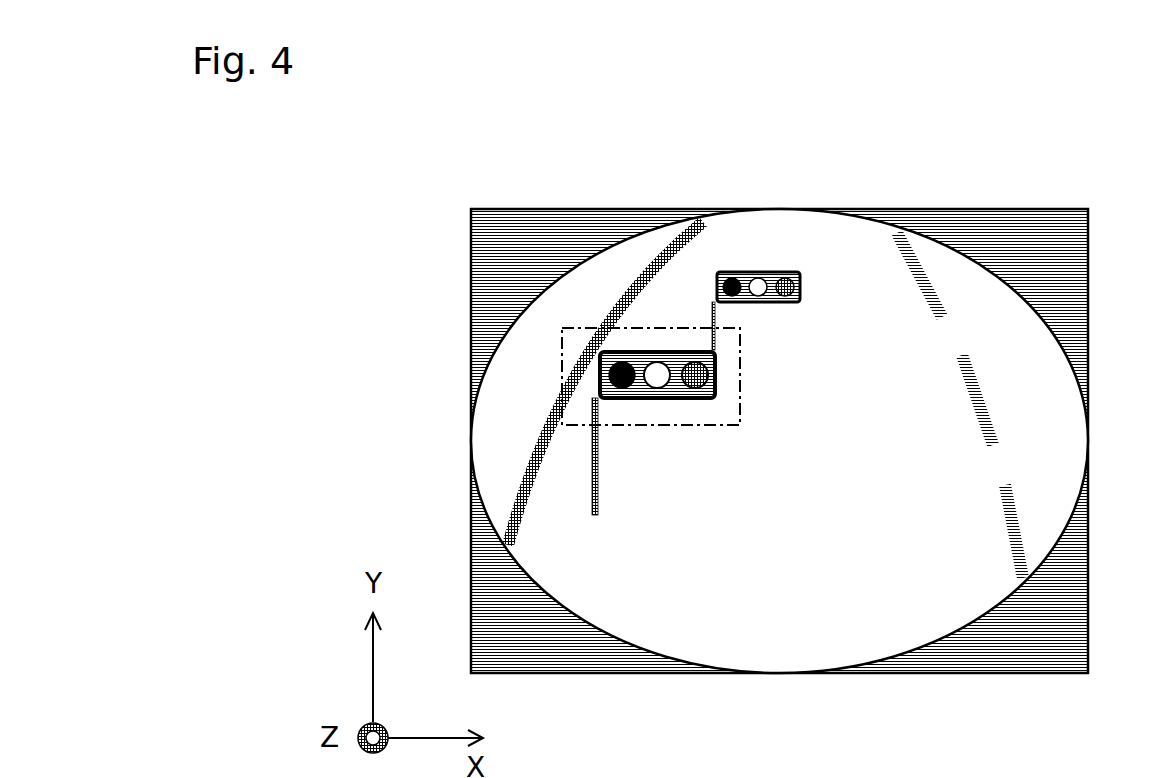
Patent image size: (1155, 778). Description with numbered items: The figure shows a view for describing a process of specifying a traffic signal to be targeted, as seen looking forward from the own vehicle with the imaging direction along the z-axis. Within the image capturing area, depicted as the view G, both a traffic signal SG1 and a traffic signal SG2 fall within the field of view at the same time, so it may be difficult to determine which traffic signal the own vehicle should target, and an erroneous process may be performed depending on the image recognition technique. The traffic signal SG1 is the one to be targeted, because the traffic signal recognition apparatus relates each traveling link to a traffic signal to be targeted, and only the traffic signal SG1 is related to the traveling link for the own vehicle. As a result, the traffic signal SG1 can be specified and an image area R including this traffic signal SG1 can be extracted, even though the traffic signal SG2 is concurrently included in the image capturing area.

The display screen / image area G is at (1050, 210).
The image area R is at (582, 325).
The traffic signal SG1 is at (600, 375).
The traffic signal SG2 is at (760, 272).